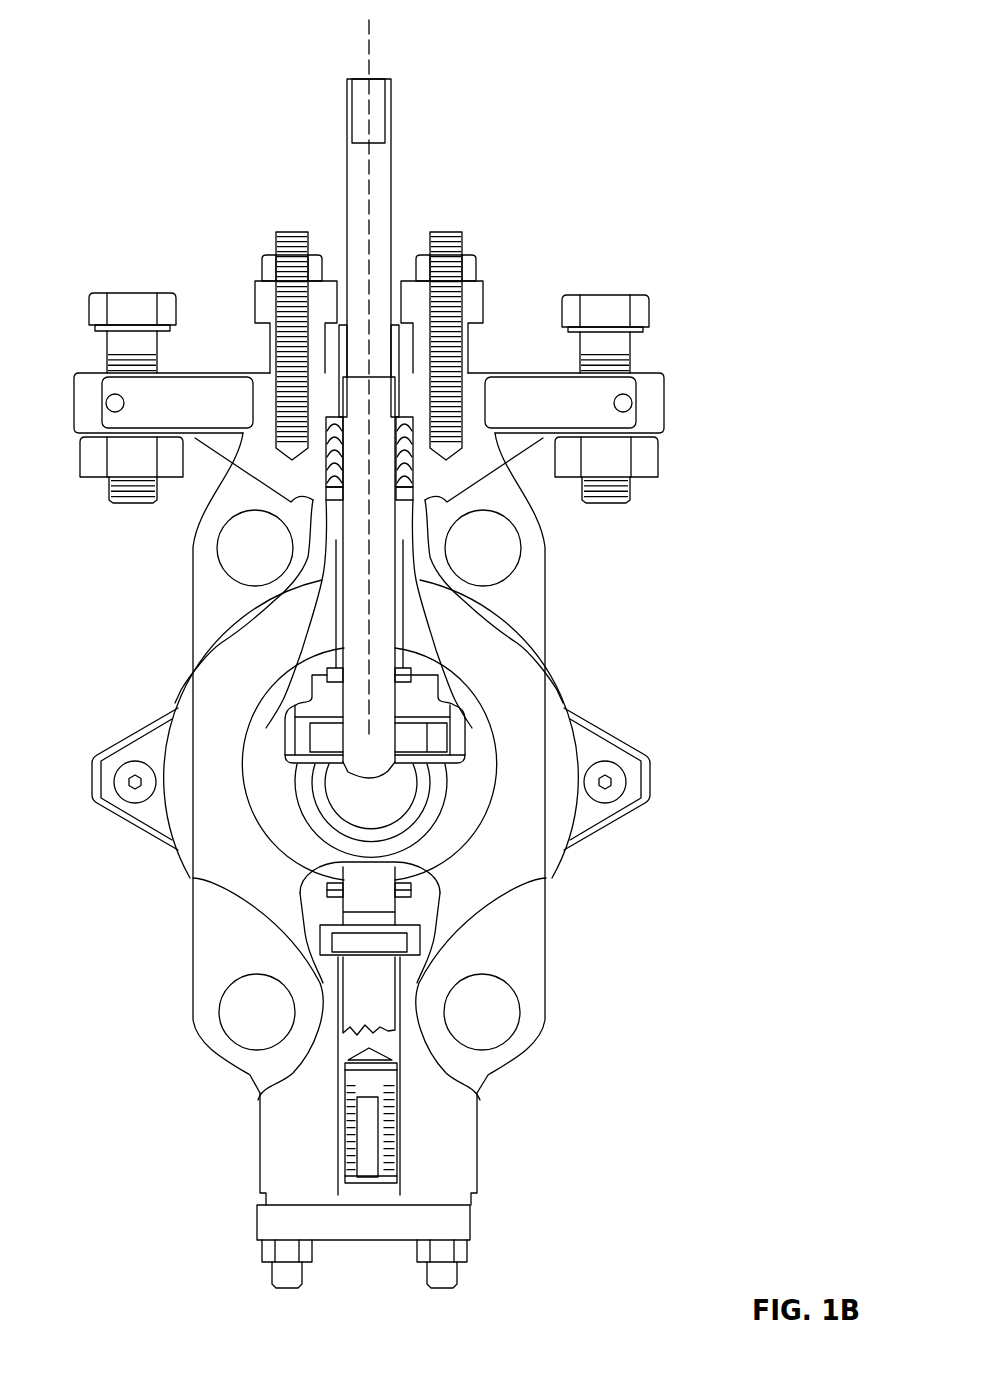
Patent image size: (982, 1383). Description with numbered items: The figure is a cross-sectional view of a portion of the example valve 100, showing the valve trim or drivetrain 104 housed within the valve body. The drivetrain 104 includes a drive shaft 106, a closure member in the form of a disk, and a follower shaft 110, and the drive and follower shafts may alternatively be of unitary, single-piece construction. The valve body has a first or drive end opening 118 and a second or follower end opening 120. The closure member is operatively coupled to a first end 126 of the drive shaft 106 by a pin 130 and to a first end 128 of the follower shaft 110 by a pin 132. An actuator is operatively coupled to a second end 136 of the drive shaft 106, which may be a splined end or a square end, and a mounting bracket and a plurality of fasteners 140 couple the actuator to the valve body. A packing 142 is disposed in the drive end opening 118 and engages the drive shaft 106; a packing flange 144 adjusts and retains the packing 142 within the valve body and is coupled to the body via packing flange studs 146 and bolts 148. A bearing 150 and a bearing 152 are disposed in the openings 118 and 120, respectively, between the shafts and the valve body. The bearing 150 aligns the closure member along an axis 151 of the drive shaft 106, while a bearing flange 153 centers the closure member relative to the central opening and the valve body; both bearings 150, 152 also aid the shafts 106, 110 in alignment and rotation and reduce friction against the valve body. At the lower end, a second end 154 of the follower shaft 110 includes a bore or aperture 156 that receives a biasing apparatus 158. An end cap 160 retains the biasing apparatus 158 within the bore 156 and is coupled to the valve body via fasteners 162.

The valve 100 is at (306, 160).
The valve trim or drivetrain 104 is at (211, 732).
The drive shaft 106 is at (393, 182).
The follower shaft 110 is at (368, 990).
The first or drive end opening 118 is at (398, 522).
The second or follower end opening 120 is at (400, 1075).
The first end of the drive shaft 126 is at (378, 686).
The first end of the follower shaft 128 is at (366, 921).
The pin 130 is at (410, 736).
The pin 132 is at (420, 940).
The second end of the drive shaft 136 is at (383, 79).
The fasteners 140 is at (125, 293).
The packing 142 is at (414, 468).
The packing flange 144 is at (484, 300).
The packing flange studs 146 is at (295, 232).
The bolts 148 is at (264, 268).
The bearing 150 is at (404, 612).
The axis of the drive shaft 151 is at (369, 36).
The bearing 152 is at (405, 905).
The bearing flange 153 is at (326, 673).
The second end of the follower shaft 154 is at (396, 1160).
The bore or aperture 156 is at (345, 1107).
The biasing apparatus 158 is at (343, 1152).
The end cap 160 is at (473, 1222).
The fasteners 162 is at (304, 1276).